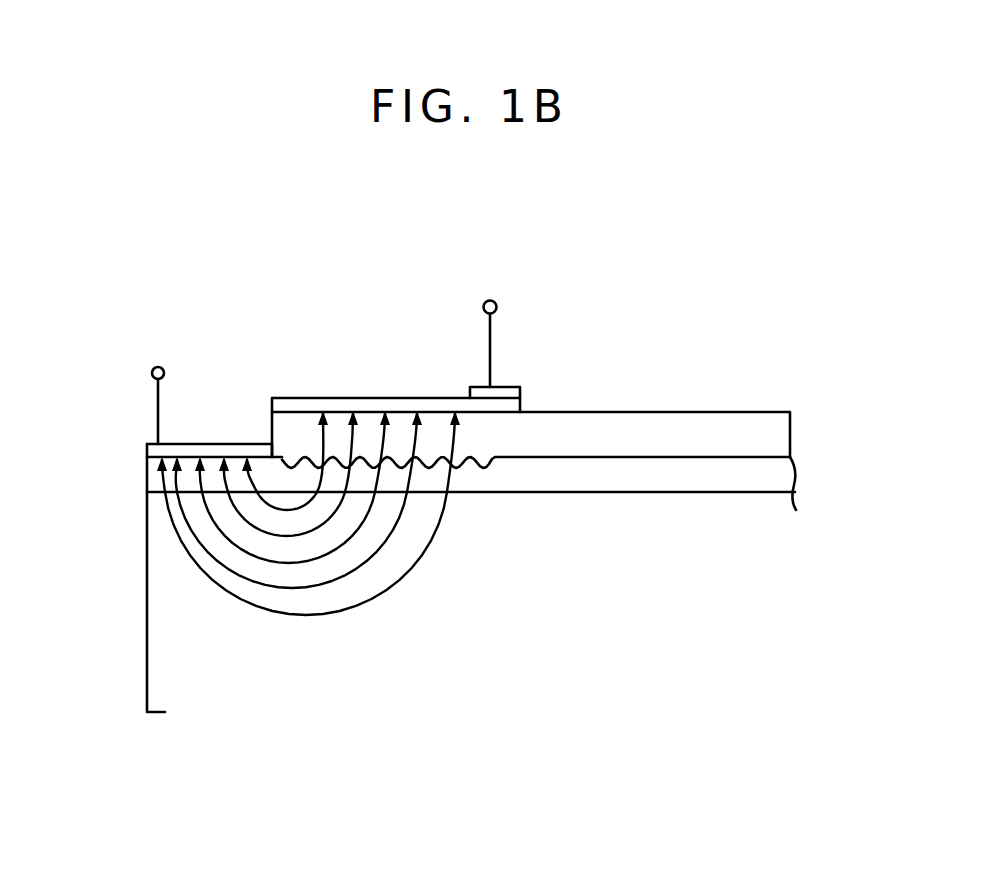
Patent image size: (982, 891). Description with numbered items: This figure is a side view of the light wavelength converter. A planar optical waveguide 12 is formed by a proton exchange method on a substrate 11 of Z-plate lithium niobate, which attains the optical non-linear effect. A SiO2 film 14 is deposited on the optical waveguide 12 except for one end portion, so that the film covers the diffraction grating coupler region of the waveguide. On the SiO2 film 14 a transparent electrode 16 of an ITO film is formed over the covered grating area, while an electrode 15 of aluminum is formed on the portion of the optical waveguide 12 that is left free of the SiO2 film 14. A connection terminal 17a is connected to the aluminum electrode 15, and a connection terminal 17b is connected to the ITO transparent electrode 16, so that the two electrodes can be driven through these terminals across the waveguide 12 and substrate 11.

The substrate 11 is at (178, 602).
The planar optical waveguide 12 is at (770, 475).
The SiO2 film 14 is at (752, 422).
The electrode 15 is at (200, 450).
The transparent electrode 16 is at (350, 404).
The connection terminal 17a is at (158, 367).
The connection terminal 17b is at (490, 300).